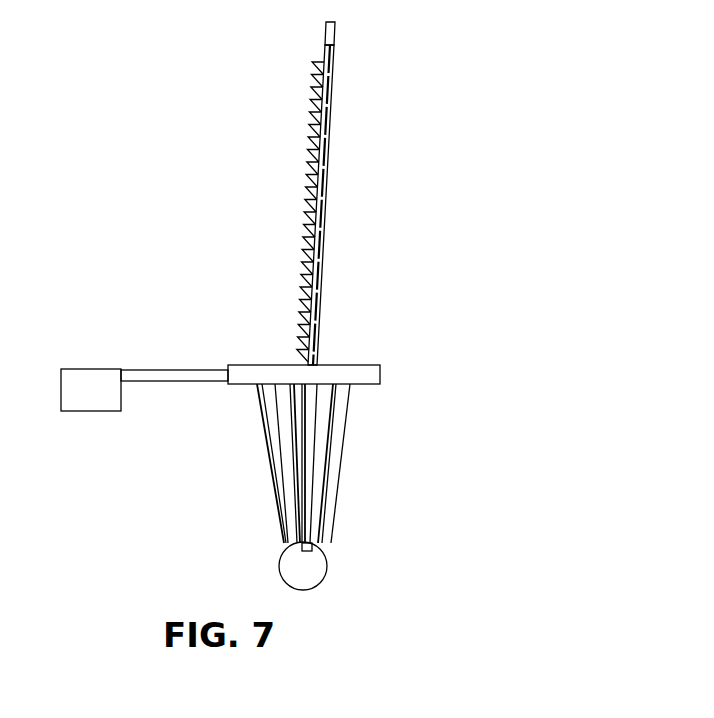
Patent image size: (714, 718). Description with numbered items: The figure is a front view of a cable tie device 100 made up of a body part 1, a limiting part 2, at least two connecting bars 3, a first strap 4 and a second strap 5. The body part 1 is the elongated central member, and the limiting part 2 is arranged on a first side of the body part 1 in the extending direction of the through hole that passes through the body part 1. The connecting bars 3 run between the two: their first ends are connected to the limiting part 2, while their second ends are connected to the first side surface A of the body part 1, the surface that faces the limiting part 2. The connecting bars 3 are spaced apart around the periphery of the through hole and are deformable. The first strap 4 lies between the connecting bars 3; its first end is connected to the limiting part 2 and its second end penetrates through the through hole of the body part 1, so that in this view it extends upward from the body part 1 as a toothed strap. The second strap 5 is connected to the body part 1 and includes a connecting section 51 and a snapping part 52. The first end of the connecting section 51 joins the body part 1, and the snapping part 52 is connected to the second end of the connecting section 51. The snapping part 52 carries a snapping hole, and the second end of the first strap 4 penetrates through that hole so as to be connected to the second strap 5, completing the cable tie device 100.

The body part 1 is at (360, 375).
The limiting part 2 is at (307, 566).
The connecting bars 3 is at (332, 478).
The first strap 4 is at (323, 262).
The second strap 5 is at (144, 361).
The connecting section 51 is at (196, 375).
The snapping part 52 is at (83, 378).
The cable tie device 100 is at (98, 504).
The first side surface A is at (357, 387).